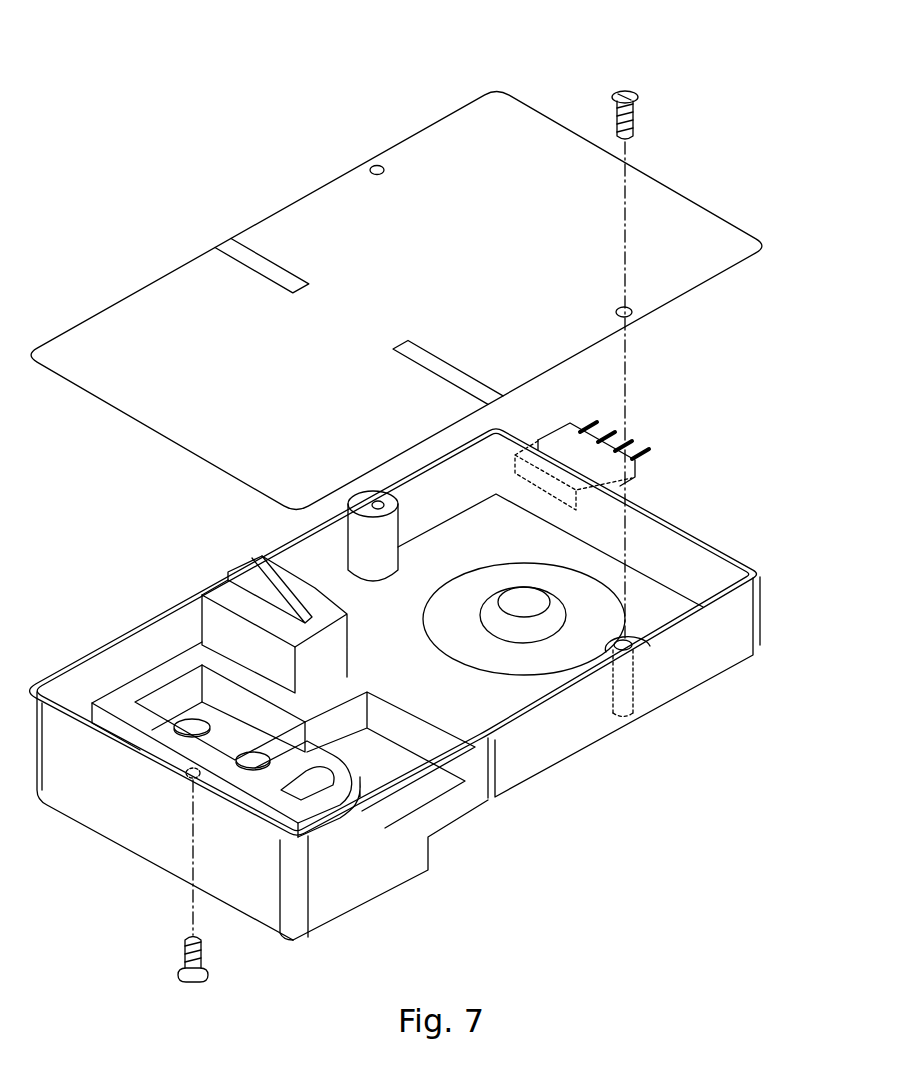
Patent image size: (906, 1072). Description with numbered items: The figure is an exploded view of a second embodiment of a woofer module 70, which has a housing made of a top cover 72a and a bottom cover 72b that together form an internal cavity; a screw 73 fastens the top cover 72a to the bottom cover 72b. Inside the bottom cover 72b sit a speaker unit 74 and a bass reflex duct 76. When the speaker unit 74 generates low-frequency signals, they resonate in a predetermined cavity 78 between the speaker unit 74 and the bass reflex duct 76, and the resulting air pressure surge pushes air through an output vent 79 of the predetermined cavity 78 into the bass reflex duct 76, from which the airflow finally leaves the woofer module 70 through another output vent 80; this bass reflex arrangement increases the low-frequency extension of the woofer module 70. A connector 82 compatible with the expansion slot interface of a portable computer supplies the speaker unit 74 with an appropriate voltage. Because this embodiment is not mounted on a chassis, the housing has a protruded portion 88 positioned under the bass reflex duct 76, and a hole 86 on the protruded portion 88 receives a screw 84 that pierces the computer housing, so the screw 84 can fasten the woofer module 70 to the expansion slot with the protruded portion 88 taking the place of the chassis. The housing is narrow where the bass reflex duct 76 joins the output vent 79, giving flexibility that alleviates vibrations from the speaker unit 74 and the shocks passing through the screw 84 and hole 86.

The woofer module 70 is at (172, 160).
The top cover 72a is at (167, 273).
The bottom cover 72b is at (645, 532).
The screw 73 is at (633, 122).
The speaker unit 74 is at (537, 655).
The bass reflex duct 76 is at (177, 630).
The predetermined cavity 78 is at (650, 603).
The output vent 79 is at (372, 636).
The output vent 80 is at (177, 727).
The connector 82 is at (641, 448).
The screw 84 is at (178, 975).
The hole 86 is at (190, 778).
The protruded portion 88 is at (342, 893).